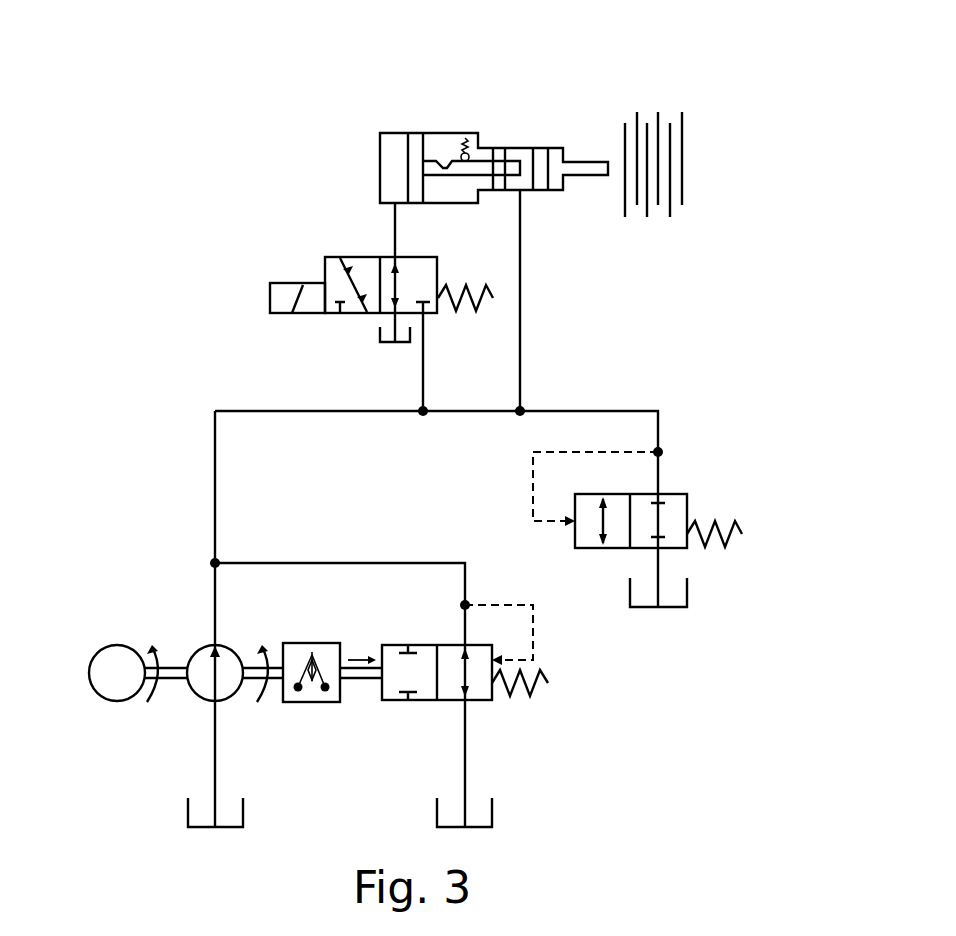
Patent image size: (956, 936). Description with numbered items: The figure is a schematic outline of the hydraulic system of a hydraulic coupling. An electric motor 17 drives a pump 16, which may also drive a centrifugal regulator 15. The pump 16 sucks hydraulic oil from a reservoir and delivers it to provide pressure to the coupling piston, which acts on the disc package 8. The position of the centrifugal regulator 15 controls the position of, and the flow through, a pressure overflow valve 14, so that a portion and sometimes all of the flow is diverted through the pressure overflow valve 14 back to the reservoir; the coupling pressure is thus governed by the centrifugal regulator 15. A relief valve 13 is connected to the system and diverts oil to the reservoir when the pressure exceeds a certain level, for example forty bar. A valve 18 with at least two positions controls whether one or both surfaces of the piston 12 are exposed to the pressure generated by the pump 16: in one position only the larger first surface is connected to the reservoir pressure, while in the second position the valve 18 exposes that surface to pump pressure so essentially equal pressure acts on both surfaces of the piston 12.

The disc package 8 is at (660, 158).
The piston 12 is at (437, 150).
The relief valve 13 is at (633, 517).
The pressure overflow valve 14 is at (455, 690).
The centrifugal regulator 15 is at (312, 698).
The pump 16 is at (214, 678).
The electric motor 17 is at (117, 693).
The valve 18 is at (368, 278).